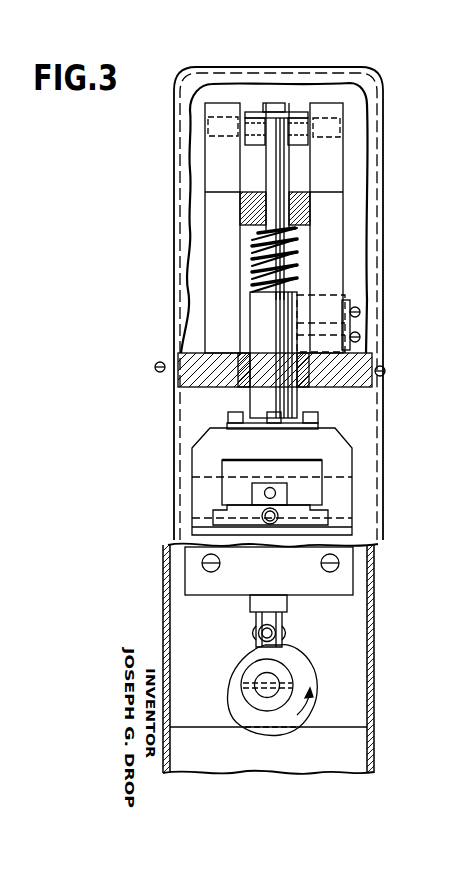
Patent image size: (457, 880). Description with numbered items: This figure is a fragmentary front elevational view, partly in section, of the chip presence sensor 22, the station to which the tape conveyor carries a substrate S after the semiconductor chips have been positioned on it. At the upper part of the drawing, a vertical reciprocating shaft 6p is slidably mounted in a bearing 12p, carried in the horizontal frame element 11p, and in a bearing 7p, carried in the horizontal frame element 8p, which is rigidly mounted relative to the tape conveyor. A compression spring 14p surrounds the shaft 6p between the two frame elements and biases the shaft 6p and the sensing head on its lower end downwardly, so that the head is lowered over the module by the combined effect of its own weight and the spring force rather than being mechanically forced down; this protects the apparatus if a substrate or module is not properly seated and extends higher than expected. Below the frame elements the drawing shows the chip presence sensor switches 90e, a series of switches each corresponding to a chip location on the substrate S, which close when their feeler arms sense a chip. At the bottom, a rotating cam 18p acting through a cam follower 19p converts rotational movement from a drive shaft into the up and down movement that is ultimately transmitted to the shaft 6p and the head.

The reciprocating shaft 6p is at (280, 178).
The horizontal frame element 11p is at (240, 209).
The bearing 12p is at (298, 213).
The compression spring 14p is at (298, 263).
The bearing 7p is at (350, 352).
The horizontal frame element 8p is at (362, 385).
The chip presence sensor 22 is at (380, 457).
The chip presence sensor switches 90e is at (290, 494).
The substrate S is at (330, 530).
The cam follower 19p is at (287, 635).
The cam 18p is at (243, 668).